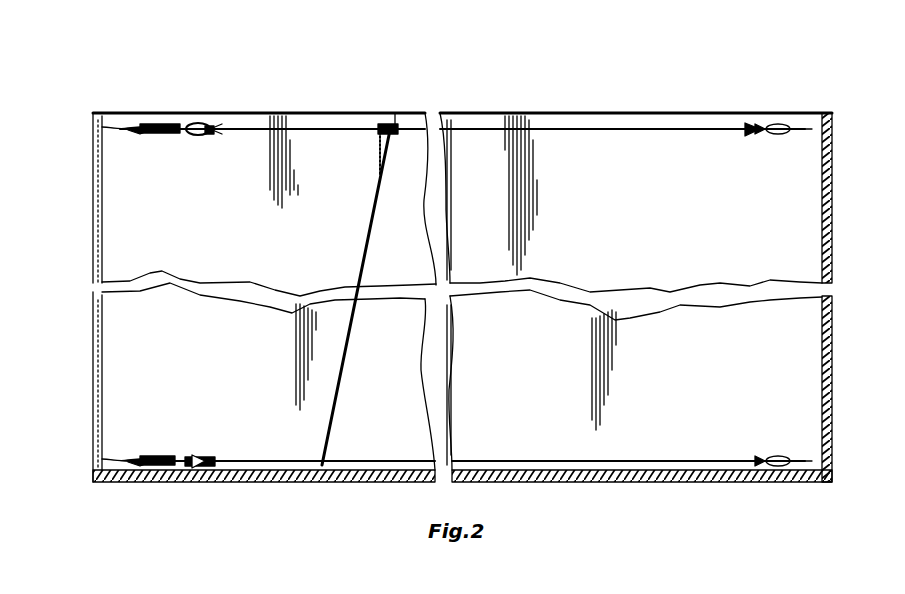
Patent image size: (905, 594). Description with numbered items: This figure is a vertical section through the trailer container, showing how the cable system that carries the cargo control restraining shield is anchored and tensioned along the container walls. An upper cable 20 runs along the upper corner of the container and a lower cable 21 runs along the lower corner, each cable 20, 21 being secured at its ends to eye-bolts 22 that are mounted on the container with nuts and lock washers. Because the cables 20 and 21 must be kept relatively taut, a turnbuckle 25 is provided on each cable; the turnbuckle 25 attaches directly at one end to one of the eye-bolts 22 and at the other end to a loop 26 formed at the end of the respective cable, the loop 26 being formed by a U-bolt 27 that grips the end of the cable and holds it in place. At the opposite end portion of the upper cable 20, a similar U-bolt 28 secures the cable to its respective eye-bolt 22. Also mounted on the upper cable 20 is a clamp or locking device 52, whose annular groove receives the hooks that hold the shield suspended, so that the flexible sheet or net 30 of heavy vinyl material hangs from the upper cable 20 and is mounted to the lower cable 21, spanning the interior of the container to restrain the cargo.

The cable 20 is at (578, 127).
The cable 21 is at (604, 460).
The eye-bolt 22 is at (120, 129).
The turnbuckle 25 is at (160, 124).
The loop 26 is at (198, 123).
The U-bolt 27 is at (208, 134).
The U-bolt 28 is at (757, 128).
The flexible sheet or net 30 is at (372, 249).
The clamp or locking device 52 is at (393, 106).